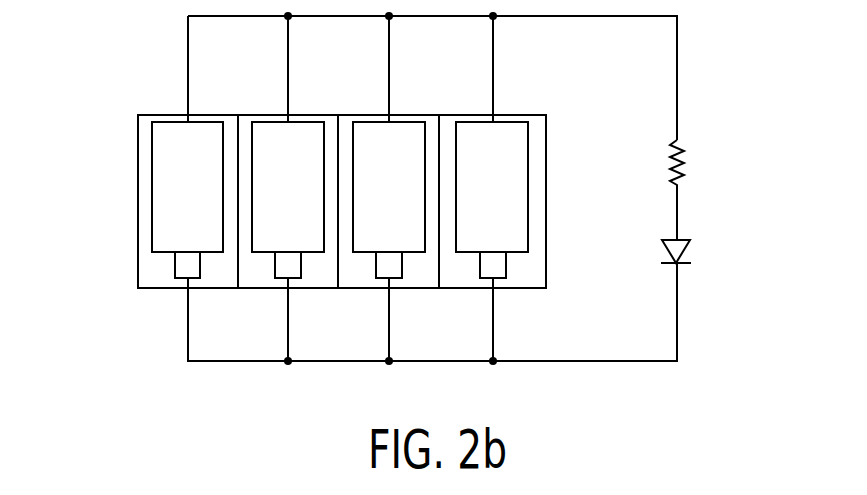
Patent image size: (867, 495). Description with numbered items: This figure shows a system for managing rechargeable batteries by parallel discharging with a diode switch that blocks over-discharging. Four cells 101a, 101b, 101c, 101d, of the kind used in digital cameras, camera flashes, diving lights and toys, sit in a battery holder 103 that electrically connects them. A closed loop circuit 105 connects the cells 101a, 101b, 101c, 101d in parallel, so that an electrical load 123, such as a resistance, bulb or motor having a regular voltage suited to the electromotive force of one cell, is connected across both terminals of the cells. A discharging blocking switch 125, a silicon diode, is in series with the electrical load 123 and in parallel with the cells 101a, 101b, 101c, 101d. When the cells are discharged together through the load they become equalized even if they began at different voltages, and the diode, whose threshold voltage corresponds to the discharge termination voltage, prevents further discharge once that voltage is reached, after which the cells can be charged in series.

The cell 101a is at (165, 123).
The cell 101b is at (275, 120).
The cell 101c is at (373, 118).
The cell 101d is at (528, 143).
The battery holder 103 is at (138, 238).
The closed loop circuit 105 is at (590, 362).
The electrical load 123 is at (684, 152).
The discharging blocking switch 125 is at (689, 250).